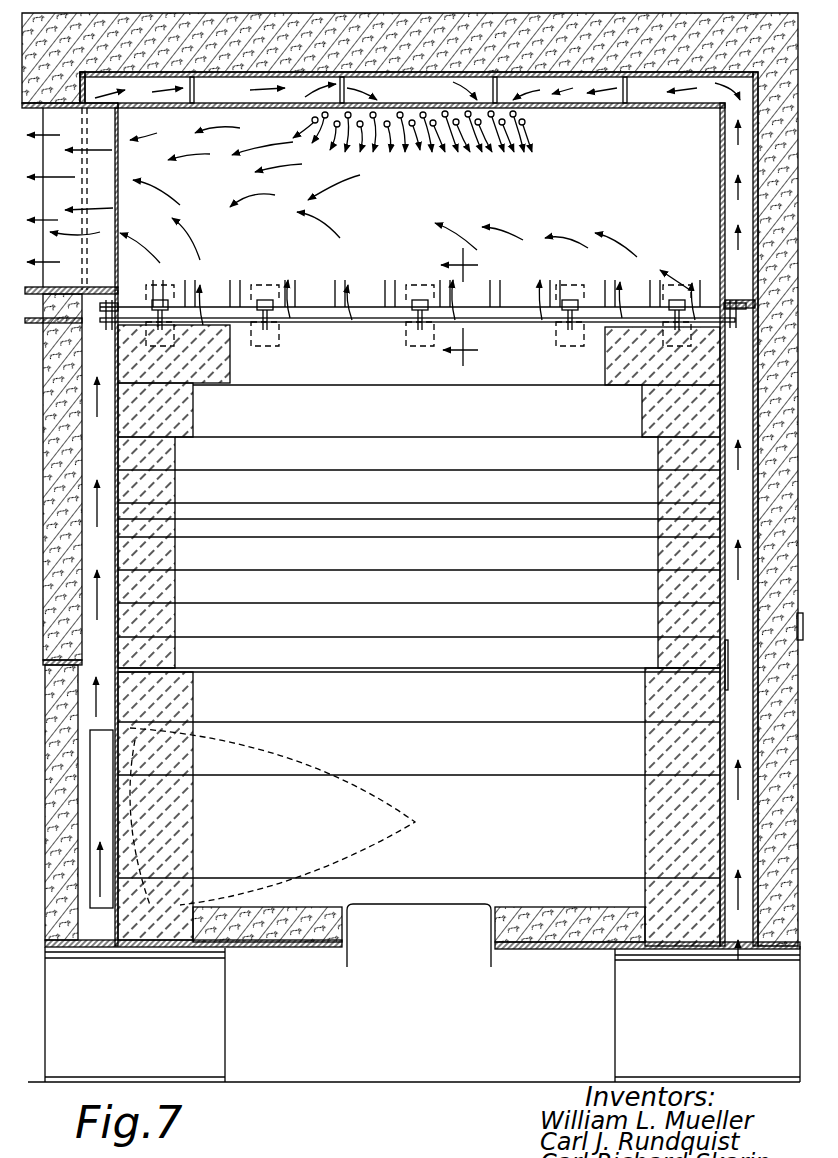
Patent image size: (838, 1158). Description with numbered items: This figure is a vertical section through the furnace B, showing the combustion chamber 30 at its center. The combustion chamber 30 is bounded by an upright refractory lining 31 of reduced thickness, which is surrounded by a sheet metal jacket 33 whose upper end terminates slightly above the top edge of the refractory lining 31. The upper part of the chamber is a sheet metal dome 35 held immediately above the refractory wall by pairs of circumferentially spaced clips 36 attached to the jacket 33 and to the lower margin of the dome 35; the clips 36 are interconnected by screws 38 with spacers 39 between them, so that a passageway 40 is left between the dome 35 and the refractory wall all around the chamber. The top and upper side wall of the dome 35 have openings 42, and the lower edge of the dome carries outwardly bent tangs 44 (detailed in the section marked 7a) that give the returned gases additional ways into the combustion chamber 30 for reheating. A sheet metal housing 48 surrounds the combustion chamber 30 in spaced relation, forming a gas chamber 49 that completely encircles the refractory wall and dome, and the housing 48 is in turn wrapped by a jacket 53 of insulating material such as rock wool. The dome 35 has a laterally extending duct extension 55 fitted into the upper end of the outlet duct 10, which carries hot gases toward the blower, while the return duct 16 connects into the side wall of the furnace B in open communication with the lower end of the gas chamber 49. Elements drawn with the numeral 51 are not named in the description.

The outlet duct 10 is at (33, 288).
The duct 16 is at (108, 903).
The combustion chamber 30 is at (440, 707).
The refractory lining 31 is at (658, 749).
The sheet metal jacket 33 is at (722, 536).
The sheet metal dome 35 is at (614, 106).
The clips 36 is at (110, 302).
The screws 38 is at (712, 303).
The spacers 39 is at (97, 300).
The passageway 40 is at (532, 318).
The openings 42 is at (432, 80).
The outwardly bent tangs 44 is at (303, 322).
The sheet metal housing 48 is at (760, 465).
The gas chamber 49 is at (750, 608).
The duct baffles 51 is at (505, 103).
The jacket of insulating material 53 is at (766, 480).
The duct extension 55 is at (97, 112).
The section line 7a is at (476, 307).
The furnace B is at (772, 609).